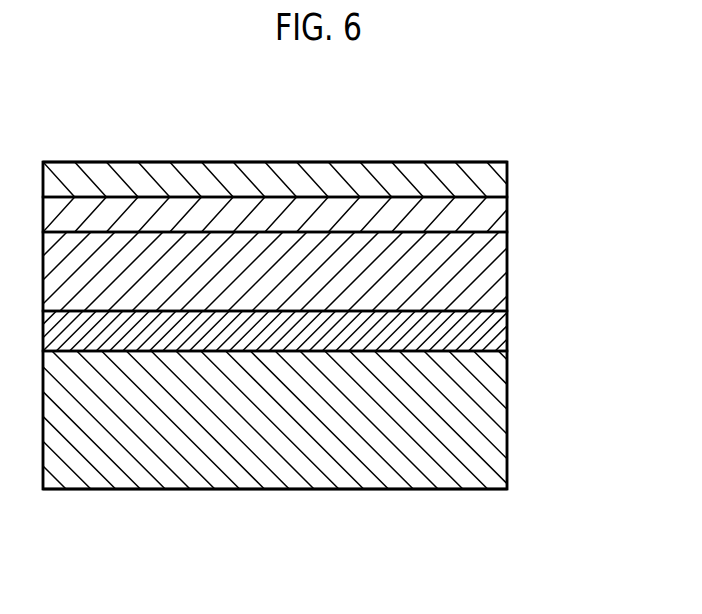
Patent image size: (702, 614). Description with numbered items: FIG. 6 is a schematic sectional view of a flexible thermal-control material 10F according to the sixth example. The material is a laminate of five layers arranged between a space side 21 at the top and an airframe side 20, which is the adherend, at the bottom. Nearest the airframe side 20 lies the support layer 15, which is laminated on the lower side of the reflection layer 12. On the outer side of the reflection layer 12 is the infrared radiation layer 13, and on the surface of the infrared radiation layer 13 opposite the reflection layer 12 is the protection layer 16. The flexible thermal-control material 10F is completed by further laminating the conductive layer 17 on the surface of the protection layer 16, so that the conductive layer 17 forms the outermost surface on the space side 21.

The flexible thermal-control material 10F is at (562, 96).
The conductive layer 17 is at (497, 176).
The protection layer 16 is at (498, 213).
The infrared radiation layer 13 is at (498, 260).
The reflection layer 12 is at (493, 342).
The support layer 15 is at (495, 423).
The space side 21 is at (275, 139).
The airframe side 20 is at (275, 510).